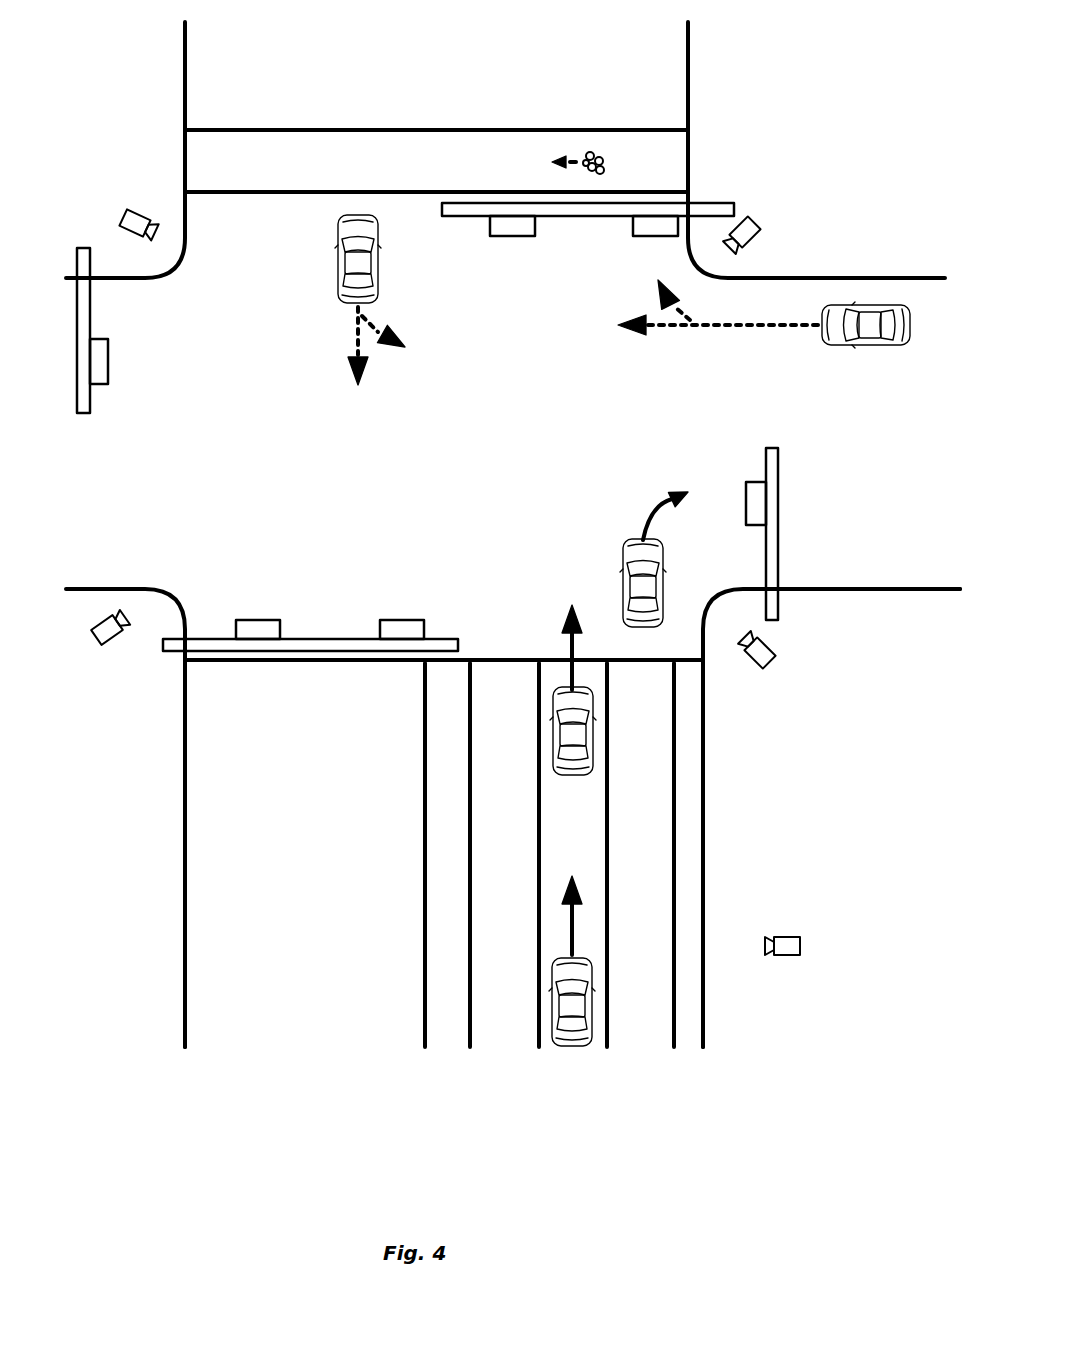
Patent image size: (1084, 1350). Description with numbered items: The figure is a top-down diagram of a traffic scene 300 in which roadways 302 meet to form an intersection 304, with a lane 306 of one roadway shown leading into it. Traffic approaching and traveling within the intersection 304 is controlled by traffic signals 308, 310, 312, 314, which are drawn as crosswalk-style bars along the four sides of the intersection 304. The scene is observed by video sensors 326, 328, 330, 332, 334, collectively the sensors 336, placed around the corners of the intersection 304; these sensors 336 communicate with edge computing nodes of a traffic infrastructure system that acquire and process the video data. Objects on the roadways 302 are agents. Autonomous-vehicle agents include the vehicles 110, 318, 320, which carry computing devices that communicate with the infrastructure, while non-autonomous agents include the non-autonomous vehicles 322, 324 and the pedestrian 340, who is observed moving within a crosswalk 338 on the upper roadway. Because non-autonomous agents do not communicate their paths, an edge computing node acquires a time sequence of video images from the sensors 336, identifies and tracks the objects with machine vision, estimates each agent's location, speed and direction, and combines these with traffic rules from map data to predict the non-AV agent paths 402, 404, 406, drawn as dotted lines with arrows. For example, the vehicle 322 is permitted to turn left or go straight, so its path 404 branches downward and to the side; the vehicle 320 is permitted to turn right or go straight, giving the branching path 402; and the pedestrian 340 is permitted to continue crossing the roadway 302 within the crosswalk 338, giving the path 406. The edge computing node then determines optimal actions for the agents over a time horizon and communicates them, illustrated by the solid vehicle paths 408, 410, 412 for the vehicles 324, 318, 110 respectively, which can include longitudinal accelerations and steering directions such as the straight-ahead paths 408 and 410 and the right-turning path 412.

The vehicle 110 is at (574, 1047).
The traffic scene 300 is at (513, 523).
The roadways 302 is at (315, 1058).
The intersection 304 is at (444, 566).
The lane 306 is at (462, 1094).
The traffic signal 308 is at (335, 635).
The traffic signal 310 is at (775, 450).
The traffic signal 312 is at (580, 228).
The traffic signal 314 is at (88, 418).
The vehicle 318 is at (573, 775).
The vehicle 320 is at (863, 345).
The non-autonomous vehicle 322 is at (380, 258).
The non-autonomous vehicle 324 is at (622, 585).
The video sensor 326 is at (770, 665).
The video sensor 328 is at (760, 222).
The video sensor 330 is at (122, 213).
The video sensor 332 is at (93, 640).
The video sensor 334 is at (805, 945).
The sensors 336 is at (870, 794).
The crosswalk 338 is at (426, 152).
The pedestrian 340 is at (586, 158).
The non-AV agent path 402 is at (745, 375).
The non-AV agent path 404 is at (318, 344).
The non-AV agent path 406 is at (515, 165).
The vehicle path 408 is at (552, 920).
The vehicle path 410 is at (532, 639).
The vehicle path 412 is at (628, 508).